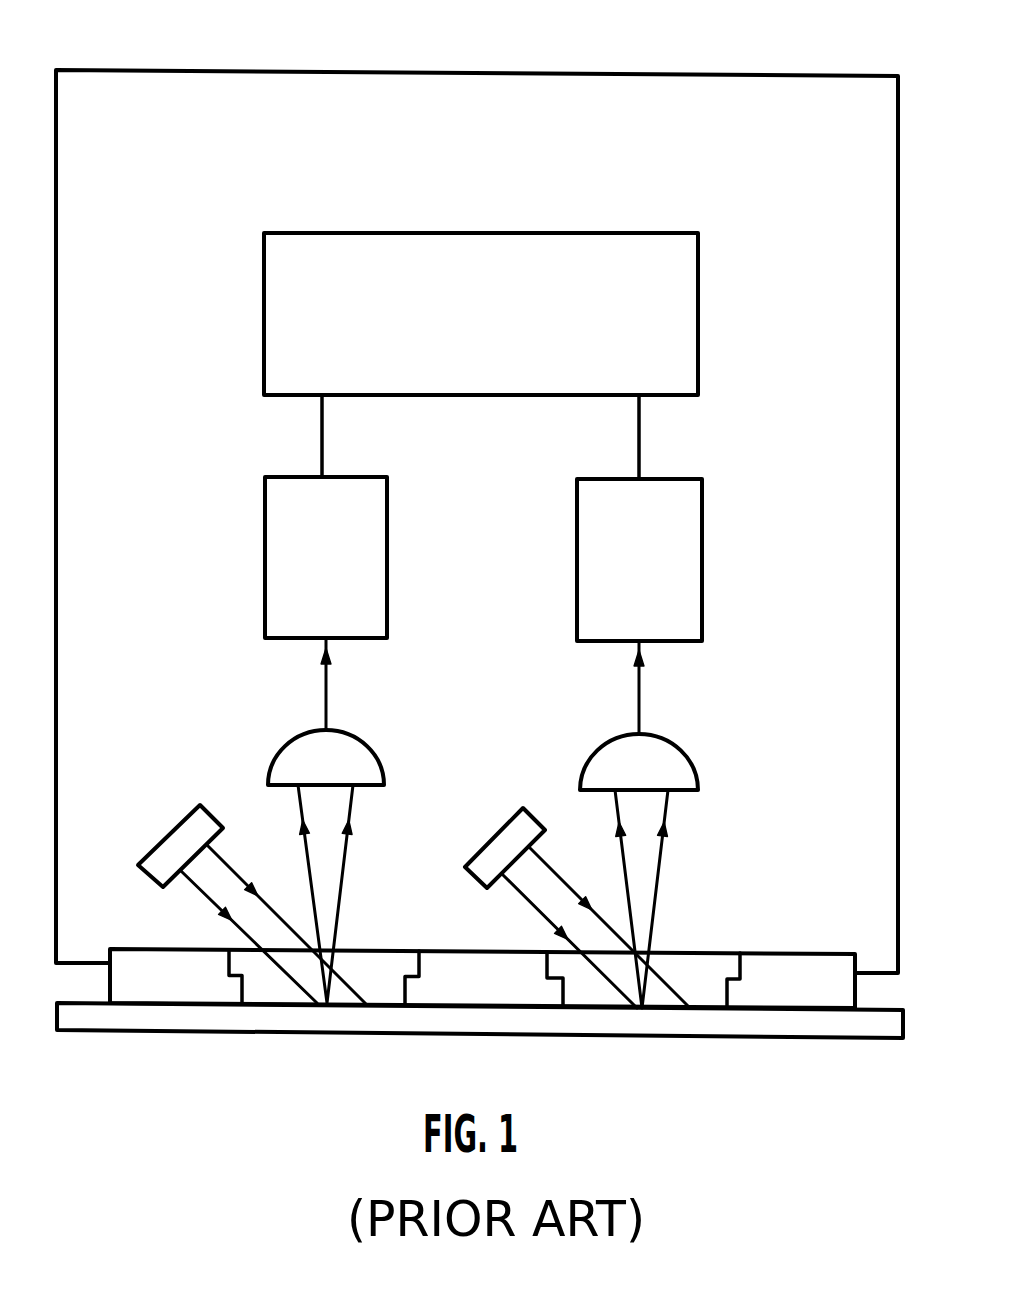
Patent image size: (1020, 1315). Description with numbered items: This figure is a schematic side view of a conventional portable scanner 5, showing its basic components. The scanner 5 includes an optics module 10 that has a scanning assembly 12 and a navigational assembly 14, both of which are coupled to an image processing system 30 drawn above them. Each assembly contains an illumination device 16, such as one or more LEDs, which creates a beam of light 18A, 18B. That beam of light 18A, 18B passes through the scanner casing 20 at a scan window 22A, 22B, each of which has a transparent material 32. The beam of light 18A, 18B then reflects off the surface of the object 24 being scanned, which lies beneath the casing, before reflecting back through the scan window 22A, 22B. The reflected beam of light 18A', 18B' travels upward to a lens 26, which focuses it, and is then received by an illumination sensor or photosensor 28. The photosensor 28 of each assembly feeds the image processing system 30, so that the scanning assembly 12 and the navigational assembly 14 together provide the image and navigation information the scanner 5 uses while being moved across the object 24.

The scanner 5 is at (392, 72).
The optics module 10 is at (758, 168).
The scanning assembly 12 is at (739, 443).
The navigational assembly 14 is at (226, 459).
The illumination device 16 is at (187, 837).
The beam of light 18A is at (596, 911).
The reflected beam of light 18A' is at (691, 899).
The beam of light 18B is at (241, 925).
The reflected beam of light 18B' is at (374, 894).
The scanner casing 20 is at (530, 990).
The scan window 22A is at (600, 995).
The scan window 22B is at (284, 1004).
The object 24 is at (745, 1018).
The lens 26 is at (308, 779).
The photosensor 28 is at (350, 578).
The image processing system 30 is at (504, 334).
The transparent material 32 is at (368, 965).